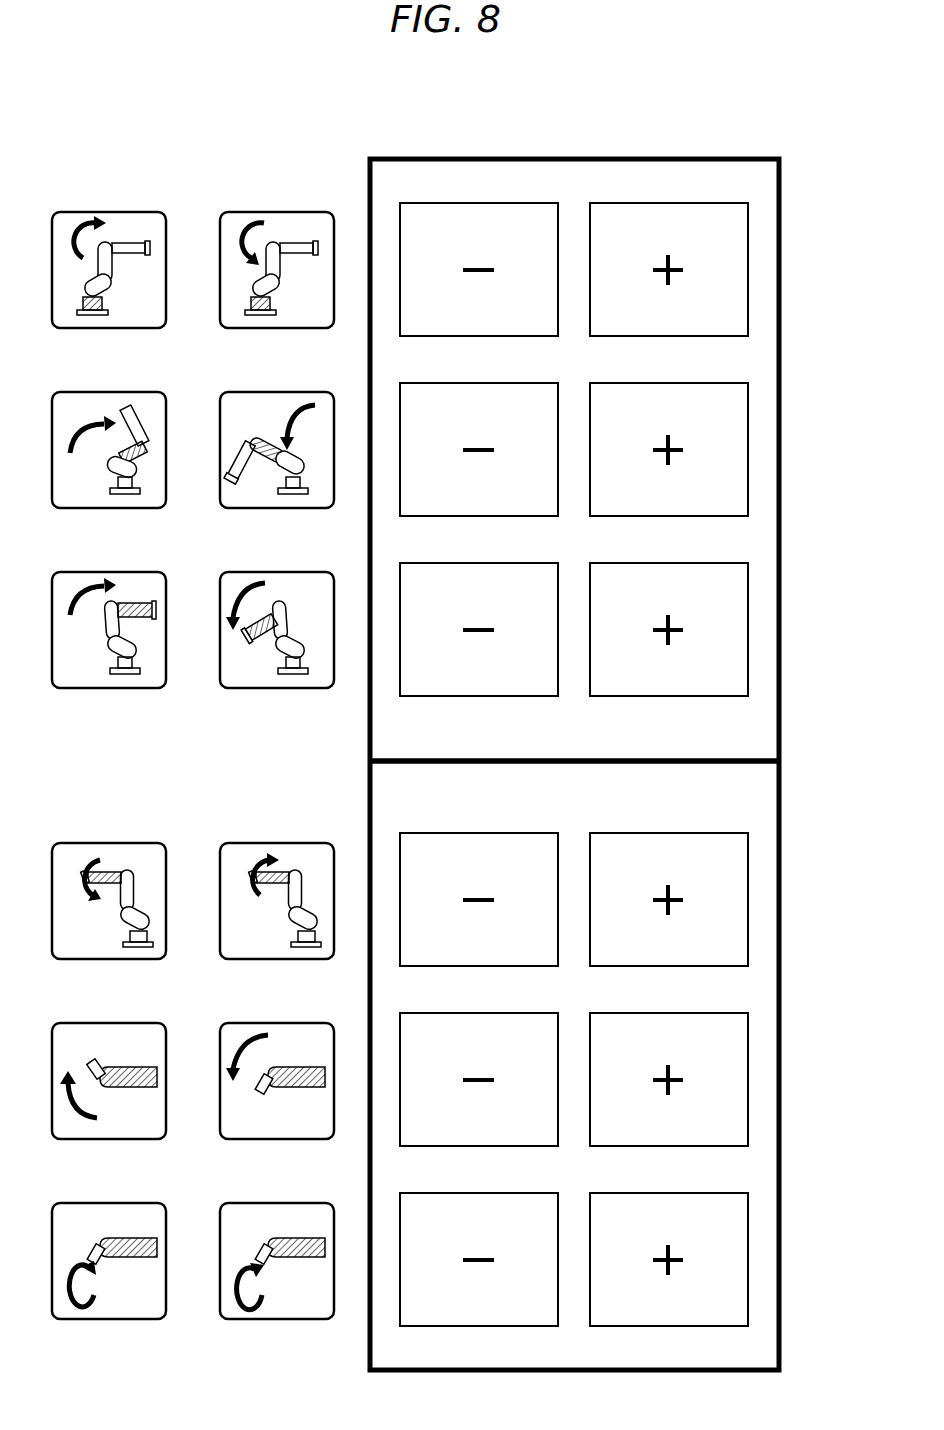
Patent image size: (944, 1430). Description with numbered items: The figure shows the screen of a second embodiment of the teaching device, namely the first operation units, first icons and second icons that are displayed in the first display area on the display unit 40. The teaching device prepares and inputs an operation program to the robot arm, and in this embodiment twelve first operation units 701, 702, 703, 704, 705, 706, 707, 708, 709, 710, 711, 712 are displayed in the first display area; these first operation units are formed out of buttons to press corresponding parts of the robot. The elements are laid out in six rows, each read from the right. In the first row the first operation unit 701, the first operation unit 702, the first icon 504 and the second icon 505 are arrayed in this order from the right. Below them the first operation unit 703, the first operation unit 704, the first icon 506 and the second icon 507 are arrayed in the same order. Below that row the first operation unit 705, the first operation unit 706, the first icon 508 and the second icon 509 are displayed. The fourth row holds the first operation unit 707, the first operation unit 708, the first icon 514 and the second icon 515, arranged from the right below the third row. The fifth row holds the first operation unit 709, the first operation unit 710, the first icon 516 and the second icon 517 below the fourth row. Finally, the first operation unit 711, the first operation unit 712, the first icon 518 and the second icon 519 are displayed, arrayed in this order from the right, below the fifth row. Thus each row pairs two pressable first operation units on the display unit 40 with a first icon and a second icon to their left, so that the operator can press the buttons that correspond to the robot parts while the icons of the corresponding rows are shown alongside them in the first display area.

The display unit 40 is at (806, 108).
The first operation unit 701 is at (693, 203).
The first operation unit 702 is at (503, 203).
The first operation unit 703 is at (693, 383).
The first operation unit 704 is at (503, 383).
The first operation unit 705 is at (693, 563).
The first operation unit 706 is at (503, 563).
The first operation unit 707 is at (693, 833).
The first operation unit 708 is at (503, 833).
The first operation unit 709 is at (693, 1013).
The first operation unit 710 is at (503, 1013).
The first operation unit 711 is at (693, 1193).
The first operation unit 712 is at (503, 1193).
The first icon 504 is at (278, 212).
The second icon 505 is at (110, 212).
The first icon 506 is at (278, 392).
The second icon 507 is at (110, 392).
The first icon 508 is at (278, 572).
The second icon 509 is at (110, 572).
The first icon 514 is at (278, 843).
The second icon 515 is at (110, 843).
The first icon 516 is at (278, 1023).
The second icon 517 is at (110, 1023).
The first icon 518 is at (278, 1203).
The second icon 519 is at (110, 1203).